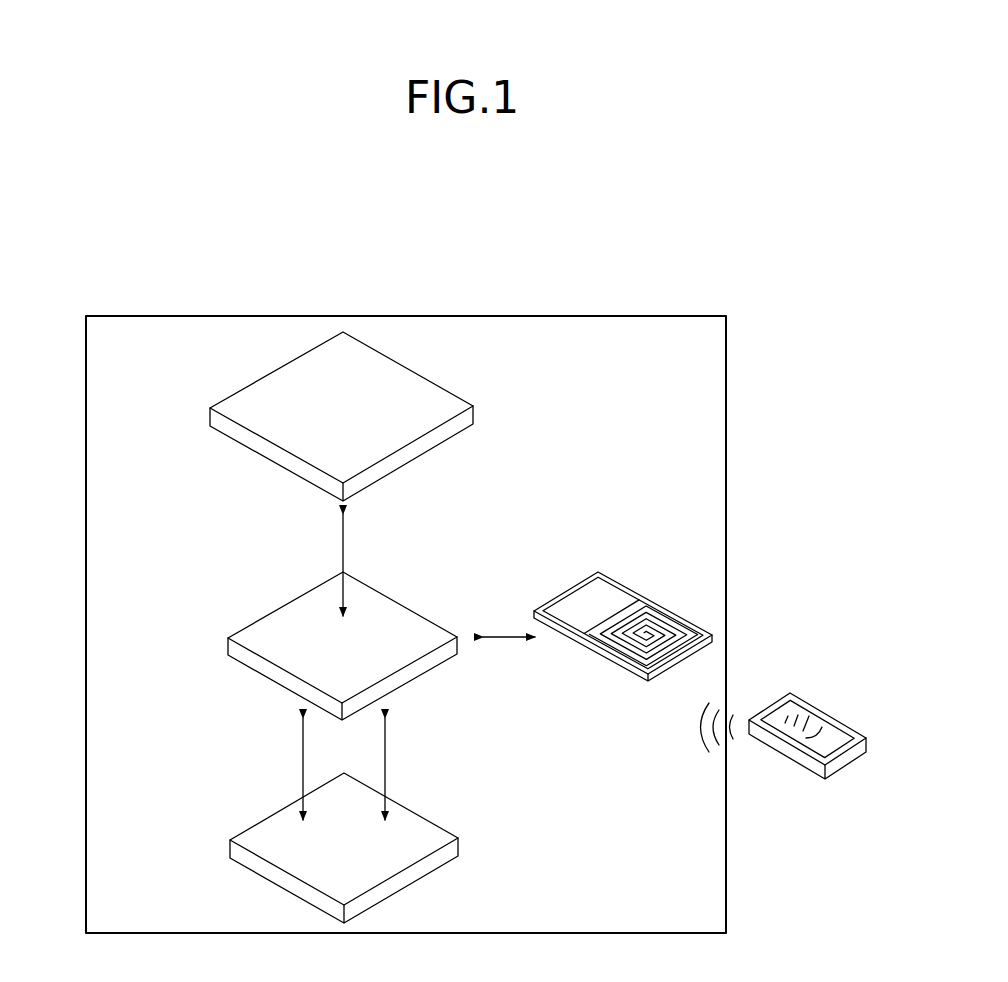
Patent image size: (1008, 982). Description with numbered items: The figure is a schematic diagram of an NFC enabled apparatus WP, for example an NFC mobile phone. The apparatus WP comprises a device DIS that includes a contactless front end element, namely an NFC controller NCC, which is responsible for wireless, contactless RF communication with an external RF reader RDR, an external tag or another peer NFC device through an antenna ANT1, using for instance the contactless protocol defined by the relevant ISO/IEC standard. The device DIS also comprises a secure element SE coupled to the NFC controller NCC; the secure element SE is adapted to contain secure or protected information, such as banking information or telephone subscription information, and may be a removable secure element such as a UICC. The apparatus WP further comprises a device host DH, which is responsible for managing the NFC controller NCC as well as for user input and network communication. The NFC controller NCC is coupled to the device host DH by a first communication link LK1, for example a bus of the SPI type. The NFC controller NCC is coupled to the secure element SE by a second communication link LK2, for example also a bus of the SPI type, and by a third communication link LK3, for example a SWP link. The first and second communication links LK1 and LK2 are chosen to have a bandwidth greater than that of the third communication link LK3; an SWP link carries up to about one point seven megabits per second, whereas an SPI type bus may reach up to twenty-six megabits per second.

The device DIS is at (170, 724).
The NFC enabled apparatus WP is at (357, 317).
The device host DH is at (475, 411).
The SPI type bus SPI is at (357, 565).
The first communication link LK1 is at (345, 558).
The NFC controller NCC is at (400, 687).
The second communication link LK2 is at (301, 774).
The SWP link SWP is at (418, 769).
The third communication link LK3 is at (388, 774).
The secure element SE is at (460, 843).
The antenna ANT1 is at (651, 602).
The RF reader RDR is at (826, 712).